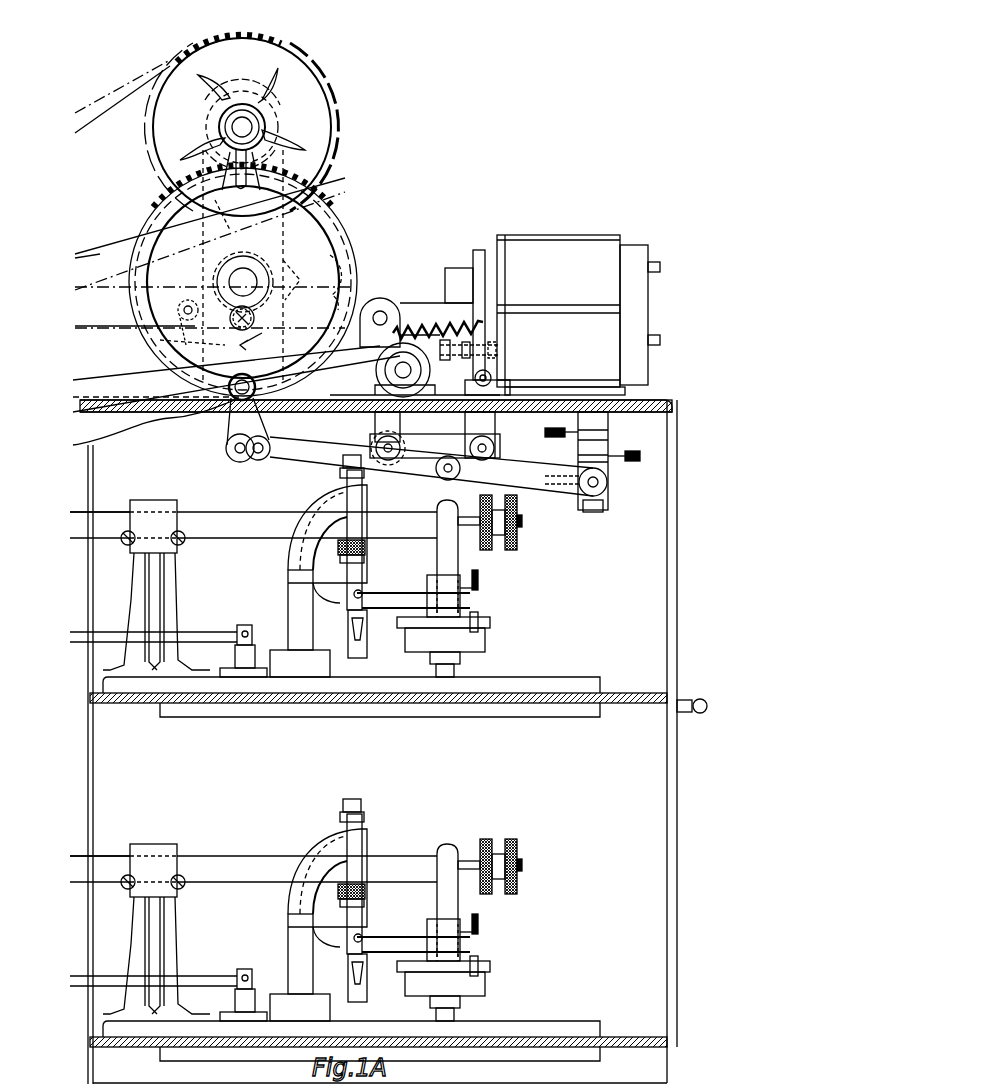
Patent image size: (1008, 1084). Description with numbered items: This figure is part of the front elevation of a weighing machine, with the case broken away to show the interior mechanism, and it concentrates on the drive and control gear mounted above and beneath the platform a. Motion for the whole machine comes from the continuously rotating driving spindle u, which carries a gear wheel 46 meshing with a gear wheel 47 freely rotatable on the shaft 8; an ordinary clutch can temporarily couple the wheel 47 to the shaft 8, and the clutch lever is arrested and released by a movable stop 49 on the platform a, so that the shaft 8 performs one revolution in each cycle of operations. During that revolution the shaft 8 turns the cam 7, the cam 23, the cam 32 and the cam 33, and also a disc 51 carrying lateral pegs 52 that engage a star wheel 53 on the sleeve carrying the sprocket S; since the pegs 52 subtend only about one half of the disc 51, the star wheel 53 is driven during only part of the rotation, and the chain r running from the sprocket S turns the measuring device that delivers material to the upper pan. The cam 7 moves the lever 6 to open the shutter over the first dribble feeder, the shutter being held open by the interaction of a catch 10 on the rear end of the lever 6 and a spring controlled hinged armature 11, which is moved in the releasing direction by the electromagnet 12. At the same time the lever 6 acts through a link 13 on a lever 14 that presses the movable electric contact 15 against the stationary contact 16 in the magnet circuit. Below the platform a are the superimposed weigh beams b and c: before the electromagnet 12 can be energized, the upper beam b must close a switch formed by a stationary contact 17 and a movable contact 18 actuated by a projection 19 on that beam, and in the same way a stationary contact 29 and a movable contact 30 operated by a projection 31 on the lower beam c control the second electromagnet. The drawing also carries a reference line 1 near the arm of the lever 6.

The toothed ring S is at (262, 37).
The hub u is at (242, 118).
The line r is at (106, 126).
The blade wheel 46 is at (280, 136).
The slide 53 is at (282, 165).
The gear teeth 47 is at (316, 190).
The outer ring 51 is at (340, 223).
The ring 52 is at (346, 244).
The disc 32 is at (352, 273).
The shaft hub 7 is at (246, 266).
The cam 23 is at (284, 278).
The pin 8 is at (250, 292).
The reference line v1 1 is at (92, 282).
The arm 6 is at (105, 324).
The roller 33 is at (176, 338).
The lever 49 is at (230, 402).
The link 13 is at (238, 432).
The rod 14 is at (410, 470).
The bracket 15 is at (578, 456).
The stop 16 is at (584, 436).
The bar 10 is at (445, 288).
The lever 11 is at (478, 260).
The motor 12 is at (578, 315).
The plate a is at (660, 404).
The upper station b is at (236, 532).
The lever 17 is at (362, 596).
The punch 18 is at (364, 610).
The die holder 19 is at (348, 630).
The lower station c is at (224, 874).
The lever 29 is at (362, 940).
The punch 30 is at (364, 954).
The die holder 31 is at (348, 976).